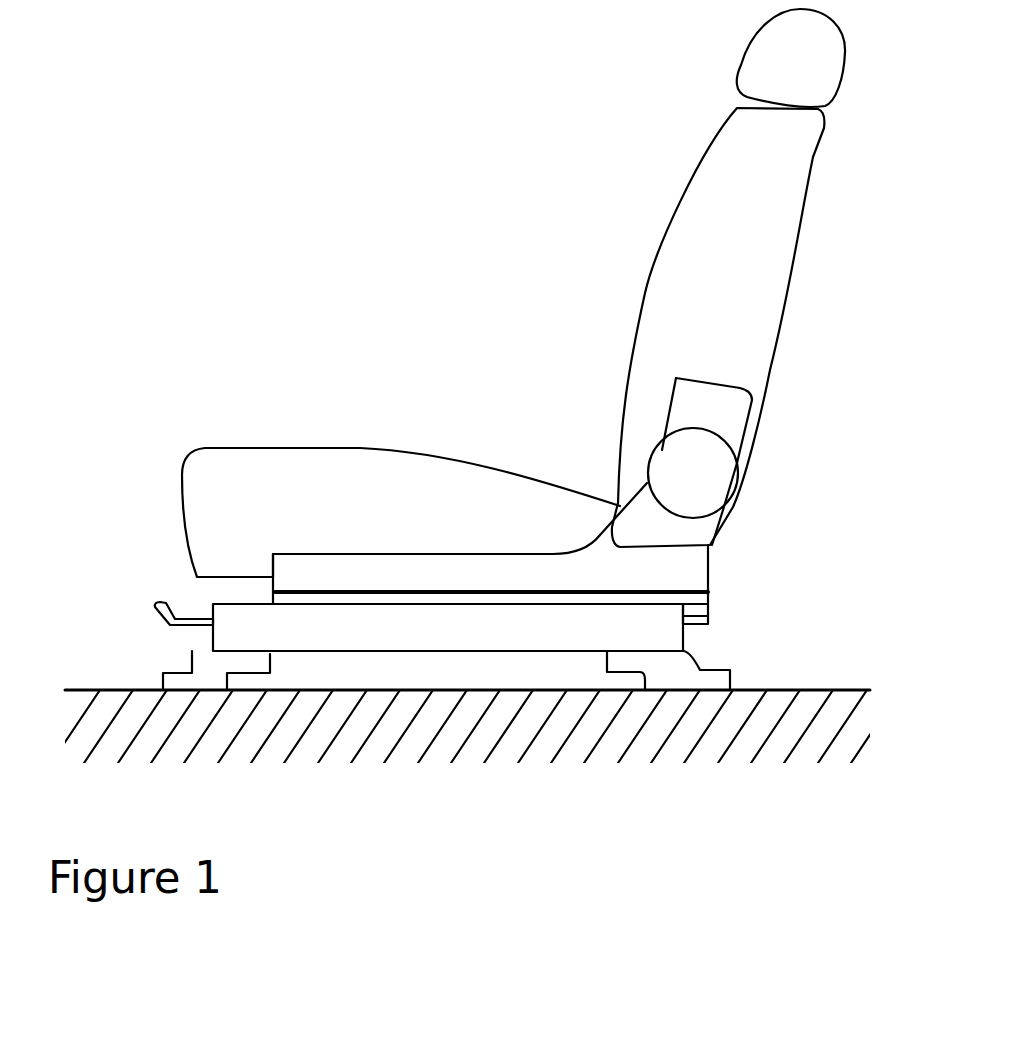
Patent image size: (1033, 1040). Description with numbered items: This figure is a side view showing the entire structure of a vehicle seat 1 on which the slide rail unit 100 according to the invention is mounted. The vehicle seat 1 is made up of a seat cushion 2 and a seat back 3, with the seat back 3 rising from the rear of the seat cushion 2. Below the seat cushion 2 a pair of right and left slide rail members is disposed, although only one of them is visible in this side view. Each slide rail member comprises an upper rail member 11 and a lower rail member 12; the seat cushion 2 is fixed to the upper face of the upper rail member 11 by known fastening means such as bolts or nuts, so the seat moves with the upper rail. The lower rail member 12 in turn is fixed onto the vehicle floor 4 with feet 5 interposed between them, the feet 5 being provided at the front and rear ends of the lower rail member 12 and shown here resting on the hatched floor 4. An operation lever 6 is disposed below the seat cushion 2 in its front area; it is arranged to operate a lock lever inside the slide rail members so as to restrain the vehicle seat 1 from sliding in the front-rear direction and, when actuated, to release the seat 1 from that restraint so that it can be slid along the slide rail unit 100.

The vehicle seat 1 is at (405, 268).
The seat cushion 2 is at (292, 488).
The seat back 3 is at (768, 277).
The vehicle floor 4 is at (813, 707).
The feet 5 is at (687, 675).
The operation lever 6 is at (158, 606).
The upper rail member 11 is at (700, 603).
The lower rail member 12 is at (335, 625).
The slide rail unit 100 is at (453, 622).